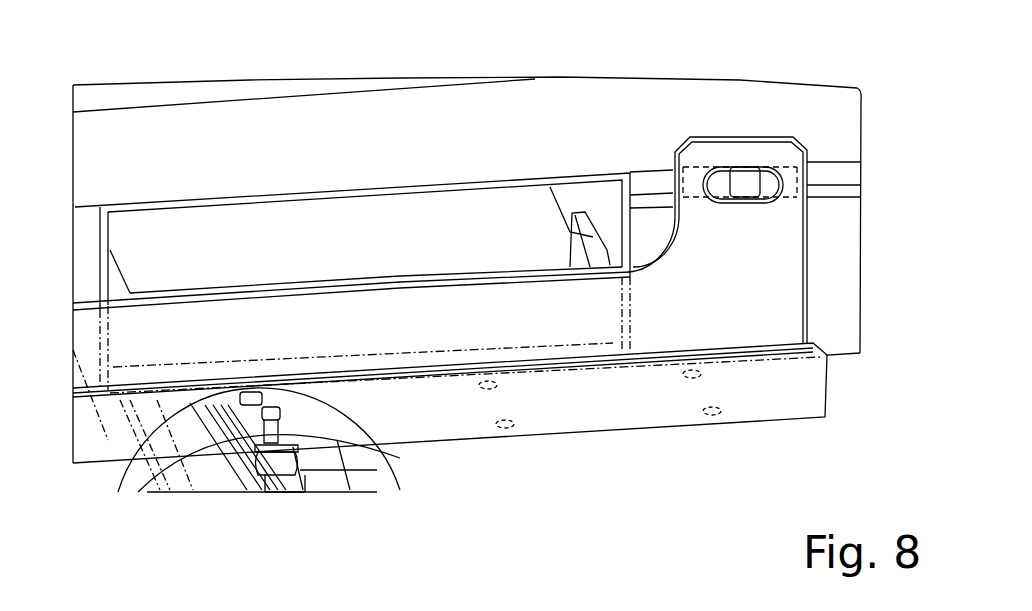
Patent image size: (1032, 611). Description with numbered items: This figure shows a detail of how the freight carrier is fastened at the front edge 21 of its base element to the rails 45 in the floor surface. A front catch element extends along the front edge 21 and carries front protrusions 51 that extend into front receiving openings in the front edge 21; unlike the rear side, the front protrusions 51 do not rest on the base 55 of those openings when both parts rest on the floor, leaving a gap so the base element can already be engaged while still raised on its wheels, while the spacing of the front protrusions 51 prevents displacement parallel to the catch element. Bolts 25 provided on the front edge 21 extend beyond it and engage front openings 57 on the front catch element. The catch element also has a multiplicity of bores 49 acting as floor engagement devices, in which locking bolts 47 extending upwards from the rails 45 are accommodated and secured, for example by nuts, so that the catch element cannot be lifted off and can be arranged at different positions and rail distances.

The front edge 21 is at (590, 146).
The base of the front receiving opening 55 is at (392, 252).
The front protrusion 51 is at (125, 270).
The front opening 57 is at (770, 163).
The bolt 25 is at (733, 193).
The locking bolt 47 is at (251, 456).
The rail 45 is at (337, 472).
The bore 49 is at (483, 384).